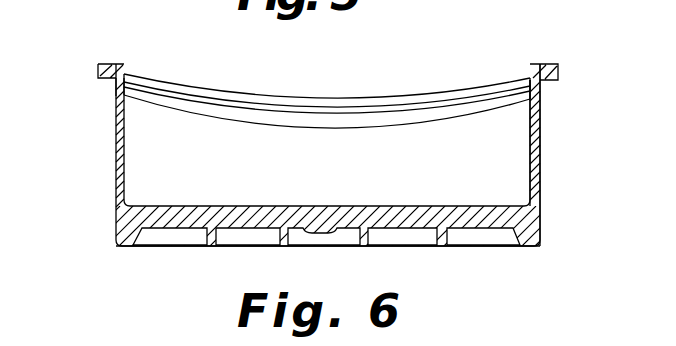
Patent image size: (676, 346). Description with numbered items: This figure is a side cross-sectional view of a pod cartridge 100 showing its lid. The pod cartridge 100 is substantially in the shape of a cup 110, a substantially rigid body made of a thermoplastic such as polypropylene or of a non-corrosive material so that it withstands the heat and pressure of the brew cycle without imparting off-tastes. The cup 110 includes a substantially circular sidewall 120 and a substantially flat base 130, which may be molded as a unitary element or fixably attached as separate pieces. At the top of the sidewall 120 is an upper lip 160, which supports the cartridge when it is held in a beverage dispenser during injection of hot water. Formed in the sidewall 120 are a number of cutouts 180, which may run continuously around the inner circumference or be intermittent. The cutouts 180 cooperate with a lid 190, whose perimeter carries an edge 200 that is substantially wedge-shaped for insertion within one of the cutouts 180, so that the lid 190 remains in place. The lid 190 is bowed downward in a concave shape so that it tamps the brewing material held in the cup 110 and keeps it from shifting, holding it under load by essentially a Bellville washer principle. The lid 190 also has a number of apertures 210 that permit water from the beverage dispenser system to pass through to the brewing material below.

The pod cartridge 100 is at (116, 36).
The cup 110 is at (546, 116).
The sidewall 120 is at (541, 172).
The base 130 is at (527, 247).
The upper lip 160 is at (558, 64).
The cutouts 180 is at (530, 78).
The lid 190 is at (181, 86).
The edge 200 is at (120, 82).
The apertures 210 is at (248, 127).